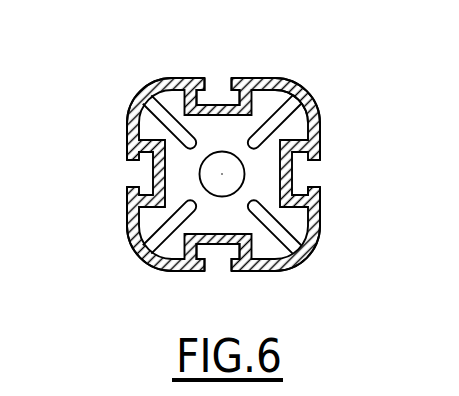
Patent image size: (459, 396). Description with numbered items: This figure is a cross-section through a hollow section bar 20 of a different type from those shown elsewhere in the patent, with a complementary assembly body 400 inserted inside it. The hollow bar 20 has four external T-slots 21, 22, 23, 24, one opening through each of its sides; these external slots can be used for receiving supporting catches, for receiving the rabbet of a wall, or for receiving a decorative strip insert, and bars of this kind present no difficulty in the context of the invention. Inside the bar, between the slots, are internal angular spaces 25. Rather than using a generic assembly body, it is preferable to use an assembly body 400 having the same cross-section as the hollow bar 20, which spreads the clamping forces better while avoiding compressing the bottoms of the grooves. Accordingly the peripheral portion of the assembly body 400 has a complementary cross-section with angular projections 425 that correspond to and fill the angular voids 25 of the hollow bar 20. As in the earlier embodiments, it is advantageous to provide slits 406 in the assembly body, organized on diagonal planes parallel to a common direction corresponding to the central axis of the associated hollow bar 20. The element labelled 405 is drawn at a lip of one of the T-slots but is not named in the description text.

The hollow bar 20 is at (288, 76).
The external T-slot 21 is at (218, 96).
The external T-slot 22 is at (300, 170).
The external T-slot 23 is at (217, 255).
The external T-slot 24 is at (133, 177).
The internal angular space 25 is at (290, 100).
The assembly body 400 is at (185, 184).
The slot lip flange 405 is at (322, 193).
The slit 406 is at (167, 77).
The angular projection 425 is at (130, 108).